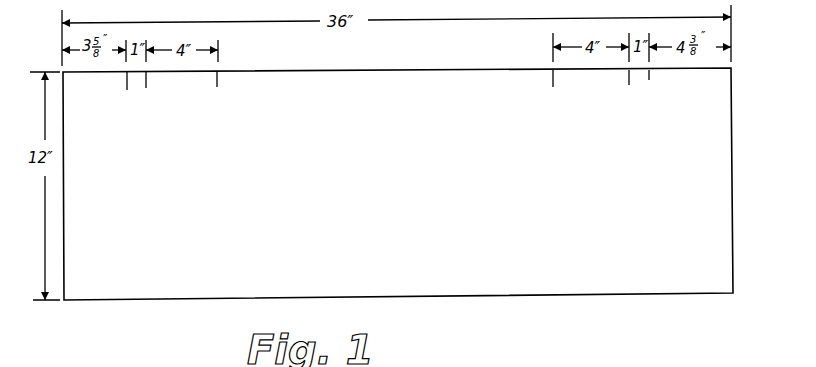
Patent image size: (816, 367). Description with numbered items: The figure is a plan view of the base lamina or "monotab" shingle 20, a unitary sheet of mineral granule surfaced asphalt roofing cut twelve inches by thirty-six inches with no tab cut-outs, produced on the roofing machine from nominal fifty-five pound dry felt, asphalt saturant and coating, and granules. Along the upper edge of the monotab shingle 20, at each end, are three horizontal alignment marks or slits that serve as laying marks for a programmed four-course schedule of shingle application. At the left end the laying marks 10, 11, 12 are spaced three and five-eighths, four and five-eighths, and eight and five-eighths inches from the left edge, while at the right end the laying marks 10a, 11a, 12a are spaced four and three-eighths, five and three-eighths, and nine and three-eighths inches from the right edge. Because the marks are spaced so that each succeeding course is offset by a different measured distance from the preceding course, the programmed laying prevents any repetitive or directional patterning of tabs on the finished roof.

The laying mark 10 is at (127, 84).
The laying mark 11 is at (146, 84).
The laying mark 12 is at (217, 80).
The laying mark 10a is at (649, 75).
The laying mark 11a is at (629, 80).
The laying mark 12a is at (553, 79).
The monotab shingle 20 is at (250, 243).